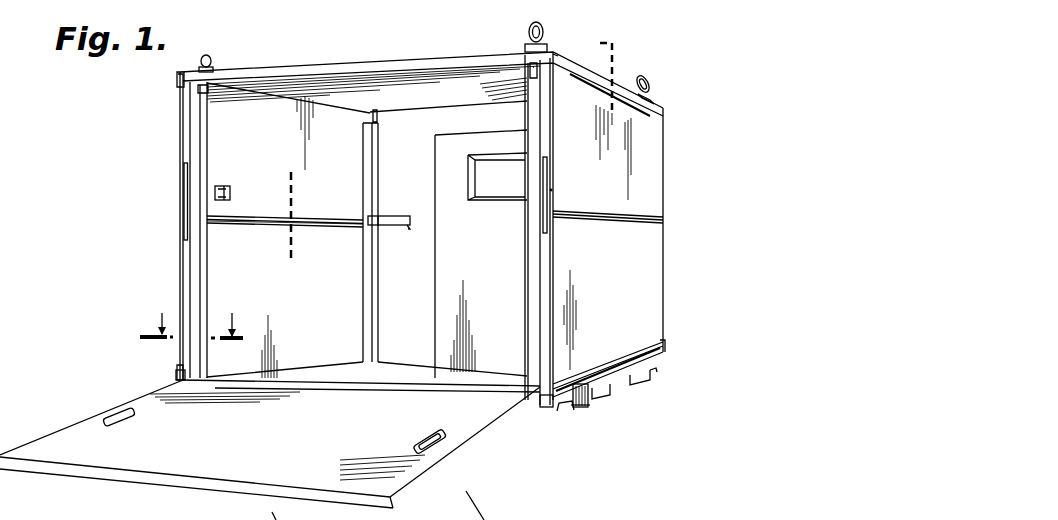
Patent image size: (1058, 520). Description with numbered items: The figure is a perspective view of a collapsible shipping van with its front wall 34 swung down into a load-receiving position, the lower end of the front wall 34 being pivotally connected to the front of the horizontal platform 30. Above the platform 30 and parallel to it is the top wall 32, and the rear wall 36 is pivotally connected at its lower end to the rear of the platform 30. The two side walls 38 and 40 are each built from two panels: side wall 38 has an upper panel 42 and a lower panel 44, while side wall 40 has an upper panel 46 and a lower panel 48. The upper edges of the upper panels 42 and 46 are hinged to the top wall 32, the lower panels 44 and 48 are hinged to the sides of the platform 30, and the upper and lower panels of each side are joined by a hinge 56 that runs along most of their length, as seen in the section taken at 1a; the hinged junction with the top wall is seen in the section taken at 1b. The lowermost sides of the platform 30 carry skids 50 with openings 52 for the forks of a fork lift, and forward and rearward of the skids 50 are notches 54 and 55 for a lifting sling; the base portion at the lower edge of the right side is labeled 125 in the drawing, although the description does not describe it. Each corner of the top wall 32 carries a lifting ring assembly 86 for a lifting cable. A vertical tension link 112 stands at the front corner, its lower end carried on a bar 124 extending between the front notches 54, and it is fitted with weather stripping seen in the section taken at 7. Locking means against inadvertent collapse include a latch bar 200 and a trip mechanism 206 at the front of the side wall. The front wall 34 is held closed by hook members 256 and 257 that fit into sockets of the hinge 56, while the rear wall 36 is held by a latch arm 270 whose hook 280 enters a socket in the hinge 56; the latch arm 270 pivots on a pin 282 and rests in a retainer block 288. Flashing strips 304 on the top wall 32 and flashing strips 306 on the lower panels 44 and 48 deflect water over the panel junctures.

The platform 30 is at (439, 377).
The top wall 32 is at (362, 57).
The front wall 34 is at (146, 400).
The rear wall 36 is at (437, 118).
The side wall 38 is at (179, 150).
The side wall 40 is at (664, 176).
The upper panel 42 is at (230, 165).
The lower panel 44 is at (218, 293).
The upper panel 46 is at (648, 138).
The lower panel 48 is at (645, 283).
The skid 50 is at (582, 408).
The opening 52 is at (640, 379).
The notch 54 is at (560, 411).
The notch 55 is at (665, 376).
The hinge 56 is at (215, 221).
The lifting ring assembly 86 is at (212, 58).
The tension link 112 is at (208, 133).
The bar 124 is at (572, 412).
The bottom rail 125 is at (661, 367).
The latch bar 200 is at (548, 225).
The trip mechanism 206 is at (233, 197).
The hook member 256 is at (105, 418).
The hook member 257 is at (448, 445).
The latch arm 270 is at (392, 214).
The hook 280 is at (360, 212).
The pivot pin 282 is at (382, 217).
The retainer block 288 is at (410, 228).
The flashing strip 304 is at (178, 81).
The flashing strip 306 is at (178, 373).
The section line 1a is at (289, 184).
The section line 1b is at (599, 42).
The section line 7 is at (191, 332).